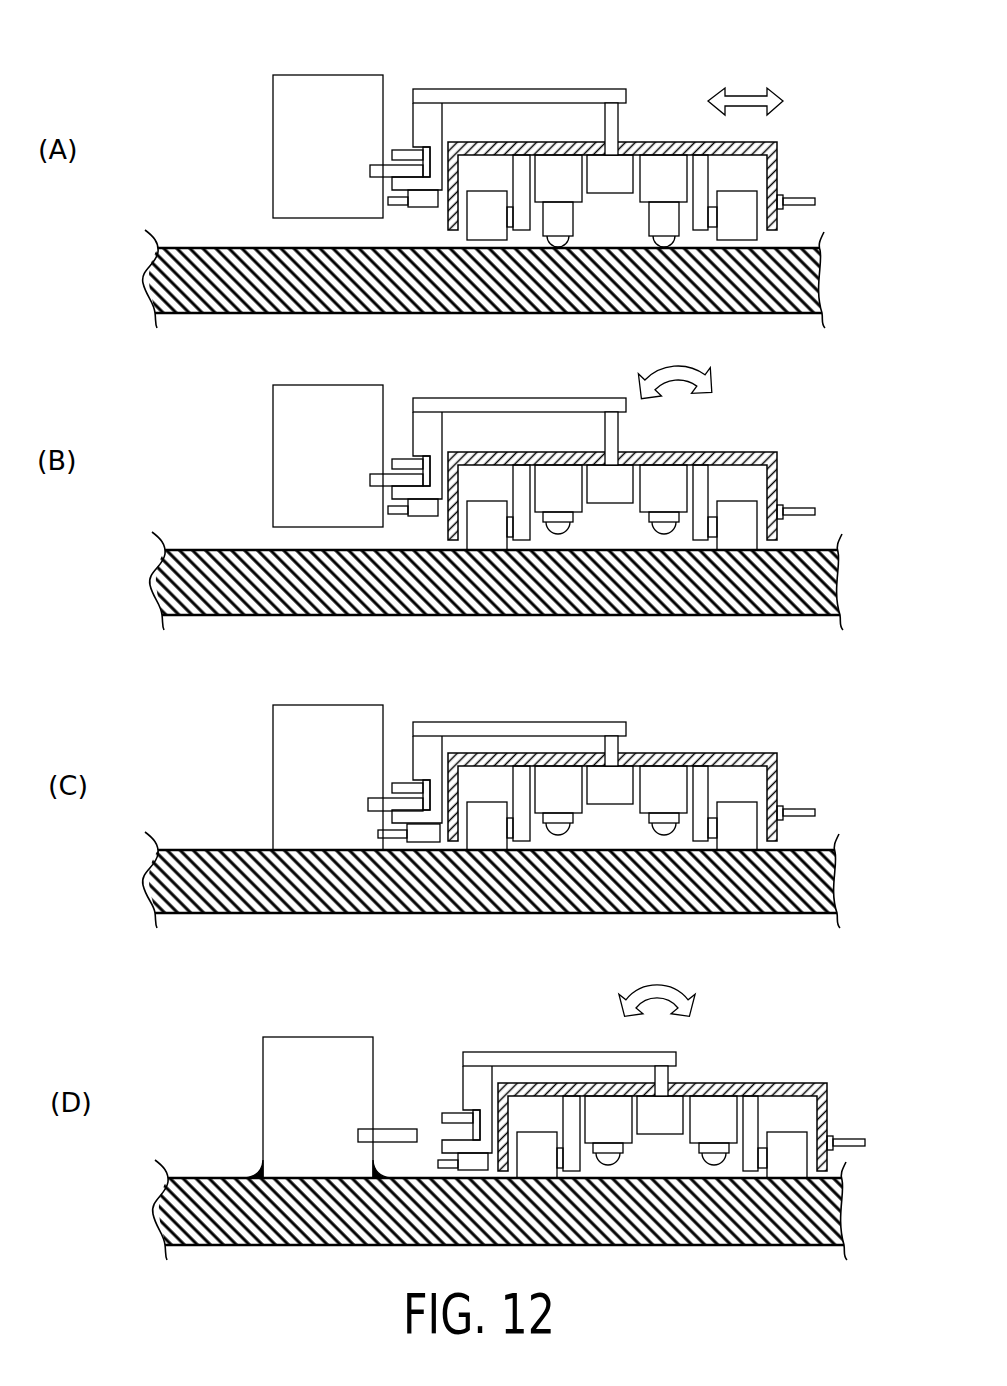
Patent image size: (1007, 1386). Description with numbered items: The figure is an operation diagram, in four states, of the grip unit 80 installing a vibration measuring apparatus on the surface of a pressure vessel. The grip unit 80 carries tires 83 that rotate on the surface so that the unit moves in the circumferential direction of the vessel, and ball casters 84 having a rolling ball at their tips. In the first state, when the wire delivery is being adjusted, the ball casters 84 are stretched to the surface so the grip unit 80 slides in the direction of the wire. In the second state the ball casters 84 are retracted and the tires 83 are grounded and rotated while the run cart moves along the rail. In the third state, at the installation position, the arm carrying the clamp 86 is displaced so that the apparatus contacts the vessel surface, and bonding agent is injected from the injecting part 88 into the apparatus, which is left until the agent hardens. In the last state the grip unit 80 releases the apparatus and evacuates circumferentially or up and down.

The grip unit 80 is at (471, 146).
The tire 83 is at (488, 500).
The ball caster 84 is at (647, 217).
The clamp 86 is at (413, 758).
The injecting part 88 is at (421, 848).